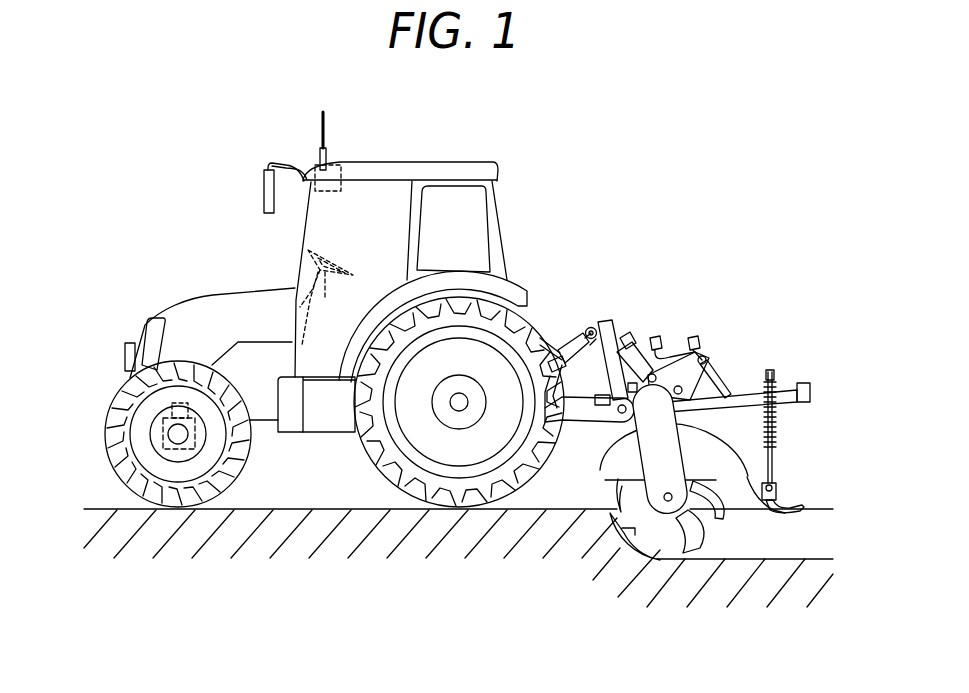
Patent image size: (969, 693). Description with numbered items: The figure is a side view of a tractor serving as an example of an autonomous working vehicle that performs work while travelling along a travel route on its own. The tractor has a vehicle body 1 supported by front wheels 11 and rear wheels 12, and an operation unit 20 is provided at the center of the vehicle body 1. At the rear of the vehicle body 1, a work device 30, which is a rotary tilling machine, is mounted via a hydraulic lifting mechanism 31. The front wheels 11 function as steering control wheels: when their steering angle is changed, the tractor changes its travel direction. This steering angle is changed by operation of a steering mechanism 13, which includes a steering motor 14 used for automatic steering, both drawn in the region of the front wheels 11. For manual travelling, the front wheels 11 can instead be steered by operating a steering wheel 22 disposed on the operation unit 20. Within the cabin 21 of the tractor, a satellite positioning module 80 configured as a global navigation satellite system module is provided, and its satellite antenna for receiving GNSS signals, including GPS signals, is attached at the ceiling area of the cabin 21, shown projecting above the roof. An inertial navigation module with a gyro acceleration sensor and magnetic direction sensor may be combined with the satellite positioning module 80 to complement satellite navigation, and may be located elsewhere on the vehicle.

The vehicle body 1 is at (295, 442).
The front wheels 11 is at (173, 509).
The rear wheels 12 is at (470, 490).
The steering mechanism 13 is at (163, 433).
The steering motor 14 is at (172, 414).
The operation unit 20 is at (357, 253).
The cabin 21 is at (480, 170).
The steering wheel 22 is at (320, 260).
The work device 30 is at (669, 543).
The hydraulic lifting mechanism 31 is at (618, 321).
The satellite positioning module 80 is at (332, 152).